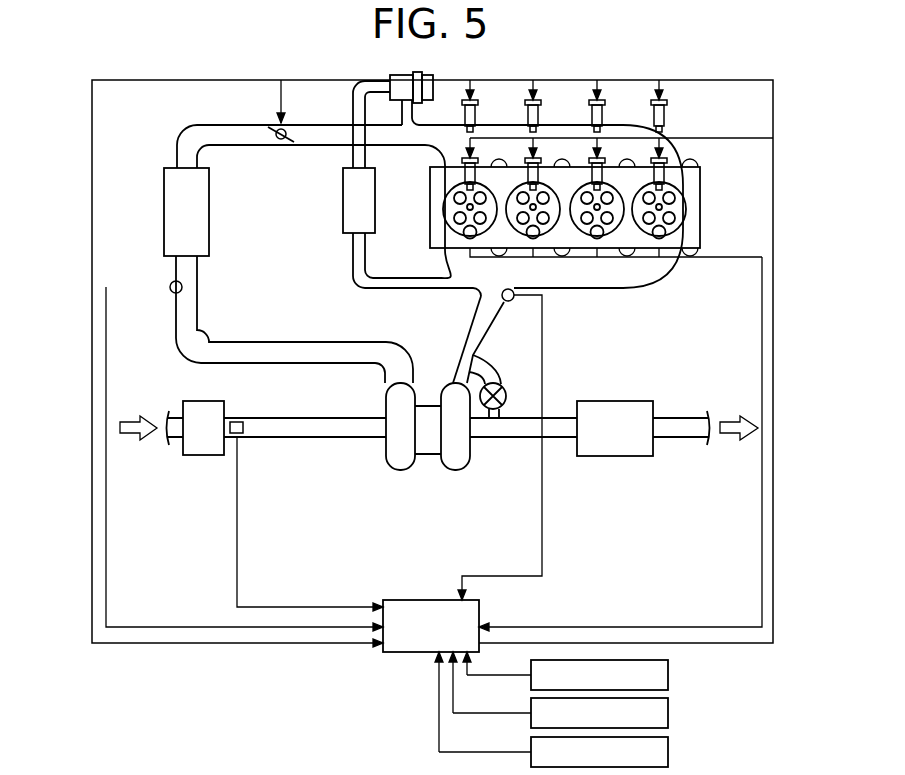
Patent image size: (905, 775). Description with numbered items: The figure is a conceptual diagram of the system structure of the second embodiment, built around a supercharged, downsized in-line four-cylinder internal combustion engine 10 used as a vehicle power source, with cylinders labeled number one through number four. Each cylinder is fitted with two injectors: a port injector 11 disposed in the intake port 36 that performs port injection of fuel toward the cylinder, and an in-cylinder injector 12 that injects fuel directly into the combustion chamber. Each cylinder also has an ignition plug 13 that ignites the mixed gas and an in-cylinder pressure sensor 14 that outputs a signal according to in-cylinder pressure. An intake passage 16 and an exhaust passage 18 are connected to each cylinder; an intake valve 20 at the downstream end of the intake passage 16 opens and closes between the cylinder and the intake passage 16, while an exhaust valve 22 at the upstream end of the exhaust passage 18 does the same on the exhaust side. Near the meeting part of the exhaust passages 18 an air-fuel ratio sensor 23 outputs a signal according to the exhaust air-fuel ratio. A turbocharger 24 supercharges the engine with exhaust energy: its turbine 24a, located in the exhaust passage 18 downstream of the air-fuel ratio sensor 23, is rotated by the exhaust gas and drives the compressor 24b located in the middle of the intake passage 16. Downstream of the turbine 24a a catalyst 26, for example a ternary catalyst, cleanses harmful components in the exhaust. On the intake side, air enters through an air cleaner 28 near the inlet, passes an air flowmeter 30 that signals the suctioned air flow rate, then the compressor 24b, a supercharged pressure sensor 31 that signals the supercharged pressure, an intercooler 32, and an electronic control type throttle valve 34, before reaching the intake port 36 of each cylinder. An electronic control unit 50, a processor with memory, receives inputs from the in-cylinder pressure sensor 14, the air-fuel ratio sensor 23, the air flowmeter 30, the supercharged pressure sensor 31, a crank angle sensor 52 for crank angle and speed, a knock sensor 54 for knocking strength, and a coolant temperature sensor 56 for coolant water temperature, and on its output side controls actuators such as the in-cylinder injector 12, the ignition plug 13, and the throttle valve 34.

The internal combustion engine 10 is at (595, 251).
The port injector 11 is at (668, 118).
The in-cylinder injector 12 is at (690, 148).
The ignition plug 13 is at (674, 234).
The in-cylinder pressure sensor 14 is at (656, 228).
The intake passage 16 is at (310, 125).
The exhaust passage 18 is at (458, 340).
The intake valve 20 is at (613, 160).
The exhaust valve 22 is at (652, 238).
The air-fuel ratio sensor 23 is at (510, 302).
The turbocharger 24 is at (429, 480).
The turbine 24a is at (454, 461).
The compressor 24b is at (402, 470).
The catalyst 26 is at (620, 401).
The air cleaner 28 is at (187, 401).
The air flowmeter 30 is at (237, 422).
The supercharged pressure sensor 31 is at (170, 284).
The intercooler 32 is at (209, 221).
The throttle valve 34 is at (276, 125).
The intake port 36 is at (488, 158).
The electronic control unit (ECU) 50 is at (418, 652).
The crank angle sensor 52 is at (668, 676).
The knock sensor 54 is at (668, 714).
The coolant temperature sensor 56 is at (668, 753).